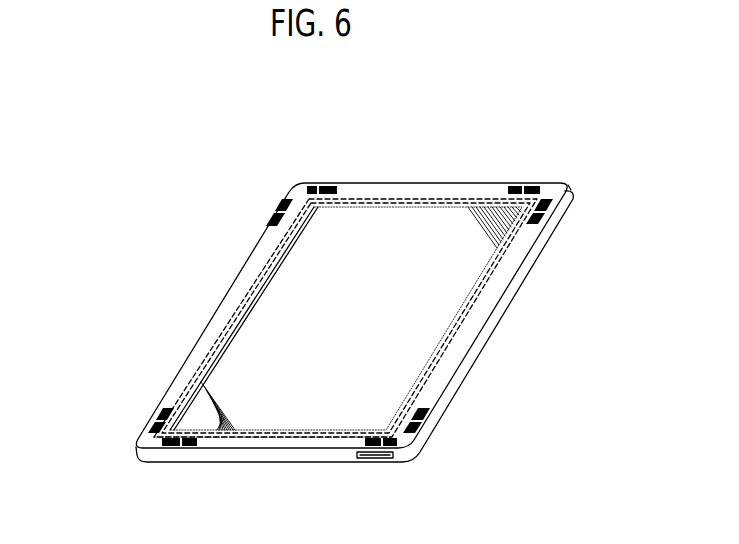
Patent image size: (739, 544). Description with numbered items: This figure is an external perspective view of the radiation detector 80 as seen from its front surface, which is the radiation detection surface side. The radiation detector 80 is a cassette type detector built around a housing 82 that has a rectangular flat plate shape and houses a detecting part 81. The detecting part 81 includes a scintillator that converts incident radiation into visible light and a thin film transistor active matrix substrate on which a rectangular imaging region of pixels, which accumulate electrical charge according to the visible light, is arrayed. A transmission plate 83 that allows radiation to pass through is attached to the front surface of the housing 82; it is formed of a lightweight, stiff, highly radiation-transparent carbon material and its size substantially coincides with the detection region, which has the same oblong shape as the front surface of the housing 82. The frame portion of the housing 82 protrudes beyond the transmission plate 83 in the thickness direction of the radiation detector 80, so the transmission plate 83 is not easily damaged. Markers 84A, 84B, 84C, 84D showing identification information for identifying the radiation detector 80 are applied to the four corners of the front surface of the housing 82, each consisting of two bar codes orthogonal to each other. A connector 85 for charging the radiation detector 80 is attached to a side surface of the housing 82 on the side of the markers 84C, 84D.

The radiation detector 80 is at (457, 144).
The detecting part 81 is at (290, 405).
The housing 82 is at (357, 185).
The transmission plate 83 is at (263, 340).
The marker 84A is at (307, 184).
The marker 84B is at (545, 200).
The marker 84C is at (410, 440).
The marker 84D is at (163, 441).
The connector 85 is at (377, 458).